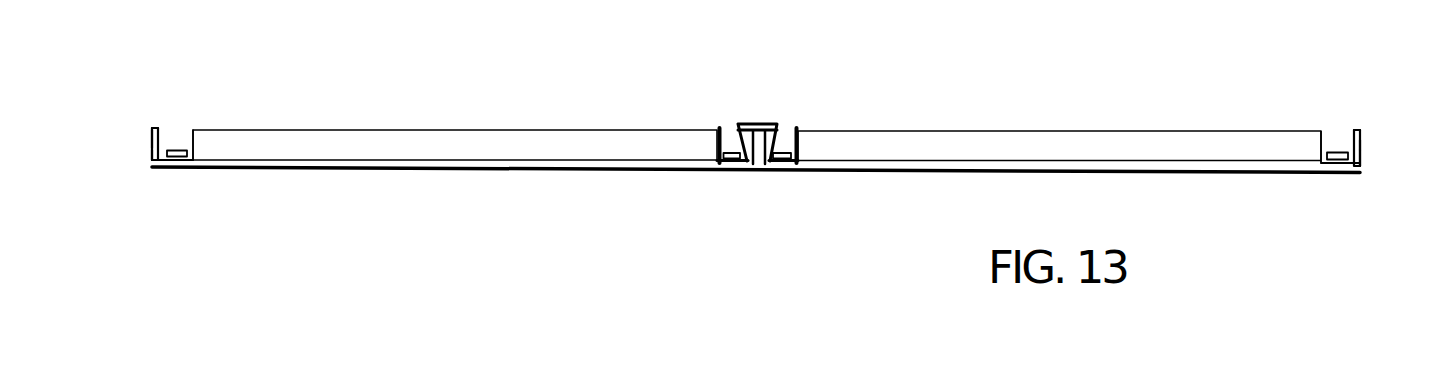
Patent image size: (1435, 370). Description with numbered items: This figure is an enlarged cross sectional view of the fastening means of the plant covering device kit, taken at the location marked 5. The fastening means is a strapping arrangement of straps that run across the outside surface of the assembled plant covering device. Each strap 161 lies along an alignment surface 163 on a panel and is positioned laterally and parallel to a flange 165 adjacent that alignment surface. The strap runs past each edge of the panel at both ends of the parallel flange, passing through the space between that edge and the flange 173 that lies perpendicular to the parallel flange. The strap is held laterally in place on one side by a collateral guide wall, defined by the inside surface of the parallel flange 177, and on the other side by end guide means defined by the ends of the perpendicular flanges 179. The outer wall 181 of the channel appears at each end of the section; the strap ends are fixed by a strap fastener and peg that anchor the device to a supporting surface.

The section view indicator 5 is at (748, 113).
The strap 161 is at (175, 143).
The alignment surface 163 is at (177, 161).
The flange 165 is at (160, 128).
The flange 173 is at (383, 137).
The parallel flange 177 is at (153, 152).
The perpendicular flanges 179 is at (193, 131).
The outer wall 181 is at (152, 138).